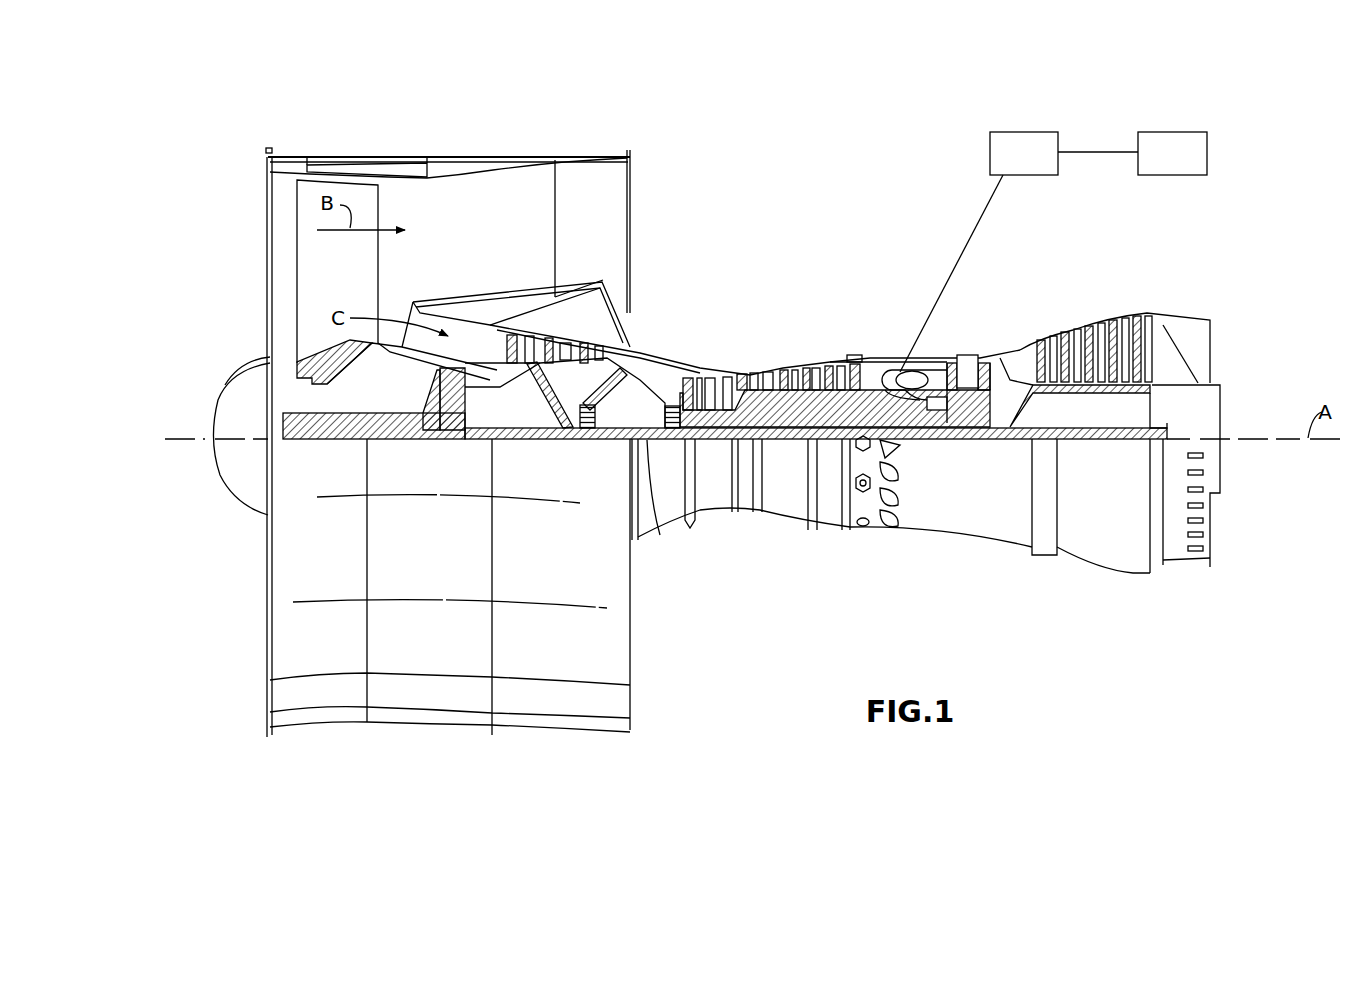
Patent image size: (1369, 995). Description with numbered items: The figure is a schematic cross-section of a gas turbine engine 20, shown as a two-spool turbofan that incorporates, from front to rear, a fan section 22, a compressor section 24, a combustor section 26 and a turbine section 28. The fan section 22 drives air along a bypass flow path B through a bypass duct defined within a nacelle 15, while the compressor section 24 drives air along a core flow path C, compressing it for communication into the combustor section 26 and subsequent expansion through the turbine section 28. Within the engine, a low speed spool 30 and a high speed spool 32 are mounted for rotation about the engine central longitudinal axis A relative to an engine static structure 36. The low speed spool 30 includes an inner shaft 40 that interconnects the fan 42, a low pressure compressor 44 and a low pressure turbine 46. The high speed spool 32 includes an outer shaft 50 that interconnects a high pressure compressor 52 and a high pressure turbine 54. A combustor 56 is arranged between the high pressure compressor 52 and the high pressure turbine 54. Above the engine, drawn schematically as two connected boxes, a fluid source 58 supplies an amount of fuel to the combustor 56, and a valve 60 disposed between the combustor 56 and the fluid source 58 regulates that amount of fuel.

The nacelle 15 is at (450, 157).
The gas turbine engine 20 is at (880, 190).
The fan section 22 is at (376, 140).
The compressor section 24 is at (680, 342).
The combustor section 26 is at (893, 332).
The turbine section 28 is at (1055, 292).
The low speed spool 30 is at (788, 452).
The high speed spool 32 is at (830, 378).
The engine static structure 36 is at (827, 538).
The inner shaft 40 is at (645, 442).
The fan 42 is at (397, 282).
The low pressure compressor 44 is at (553, 347).
The low pressure turbine 46 is at (1097, 325).
The outer shaft 50 is at (913, 440).
The high pressure compressor 52 is at (760, 405).
The high pressure turbine 54 is at (968, 352).
The combustor 56 is at (922, 366).
The fluid source 58 is at (1160, 132).
The valve 60 is at (1015, 132).